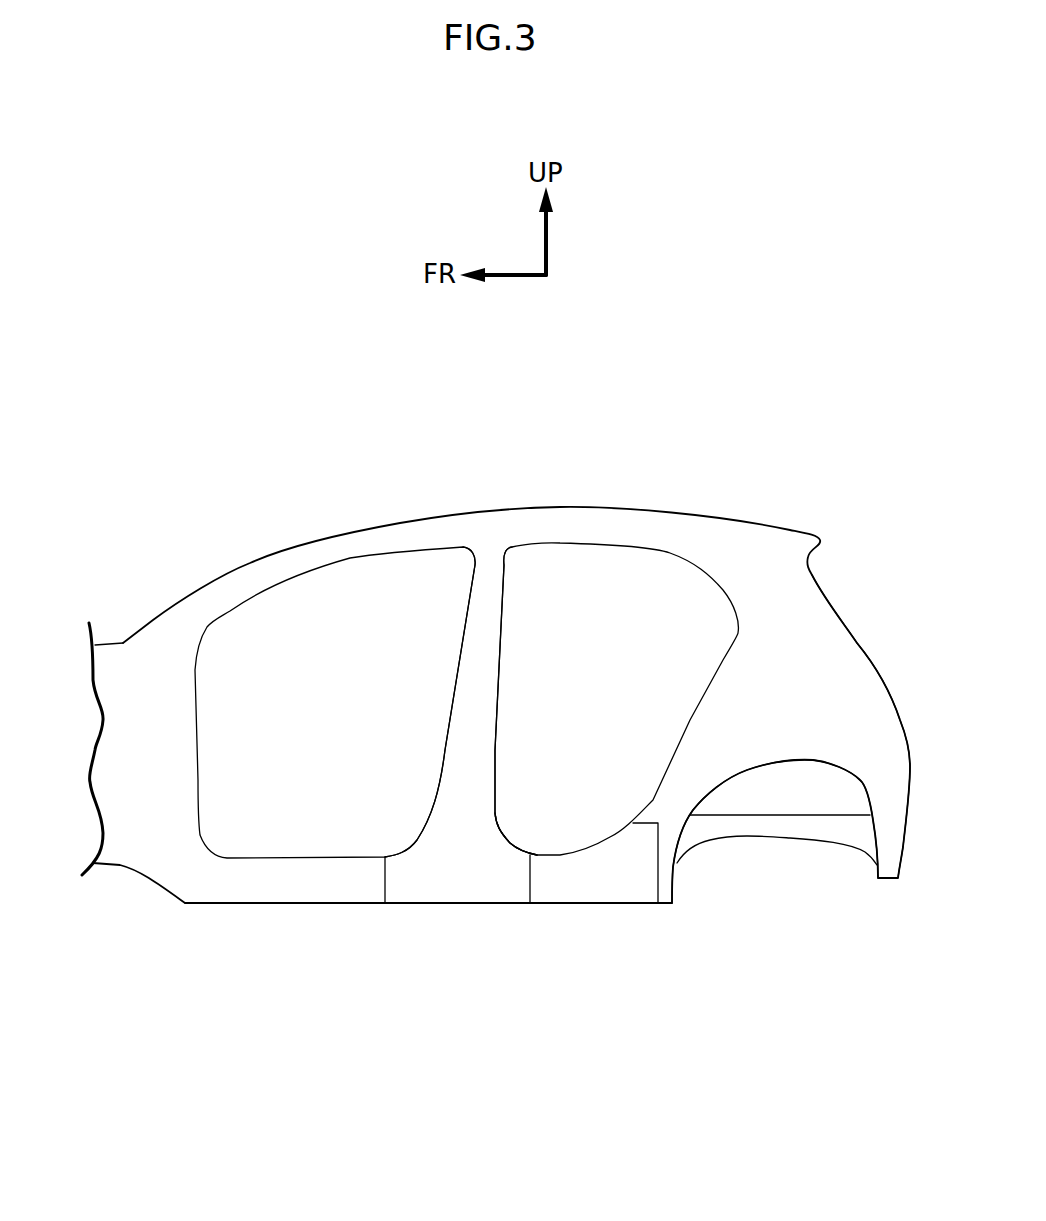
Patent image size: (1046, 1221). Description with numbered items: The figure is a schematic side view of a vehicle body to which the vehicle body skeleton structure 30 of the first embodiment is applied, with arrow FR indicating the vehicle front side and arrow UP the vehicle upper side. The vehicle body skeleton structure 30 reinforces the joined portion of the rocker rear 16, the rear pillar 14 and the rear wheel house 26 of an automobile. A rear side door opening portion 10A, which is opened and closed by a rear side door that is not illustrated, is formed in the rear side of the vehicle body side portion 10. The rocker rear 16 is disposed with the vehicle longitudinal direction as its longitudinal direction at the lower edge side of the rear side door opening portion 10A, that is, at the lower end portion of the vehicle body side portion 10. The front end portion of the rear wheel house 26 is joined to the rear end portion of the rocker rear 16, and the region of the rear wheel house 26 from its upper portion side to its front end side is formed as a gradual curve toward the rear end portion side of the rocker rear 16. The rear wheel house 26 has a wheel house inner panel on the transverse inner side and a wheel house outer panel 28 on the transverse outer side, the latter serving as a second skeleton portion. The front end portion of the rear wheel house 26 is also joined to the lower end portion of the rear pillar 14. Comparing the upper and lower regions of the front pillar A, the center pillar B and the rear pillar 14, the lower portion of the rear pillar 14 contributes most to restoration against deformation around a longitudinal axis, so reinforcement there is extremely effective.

The vehicle body side portion 10 is at (693, 458).
The rear side door opening portion 10A is at (500, 828).
The rear pillar 14 is at (712, 715).
The rocker rear 16 is at (500, 922).
The rear wheel house 26 is at (872, 755).
The wheel house outer panel 28 is at (795, 750).
The vehicle body skeleton structure 30 is at (643, 930).
The front pillar A is at (180, 675).
The center pillar B is at (470, 697).